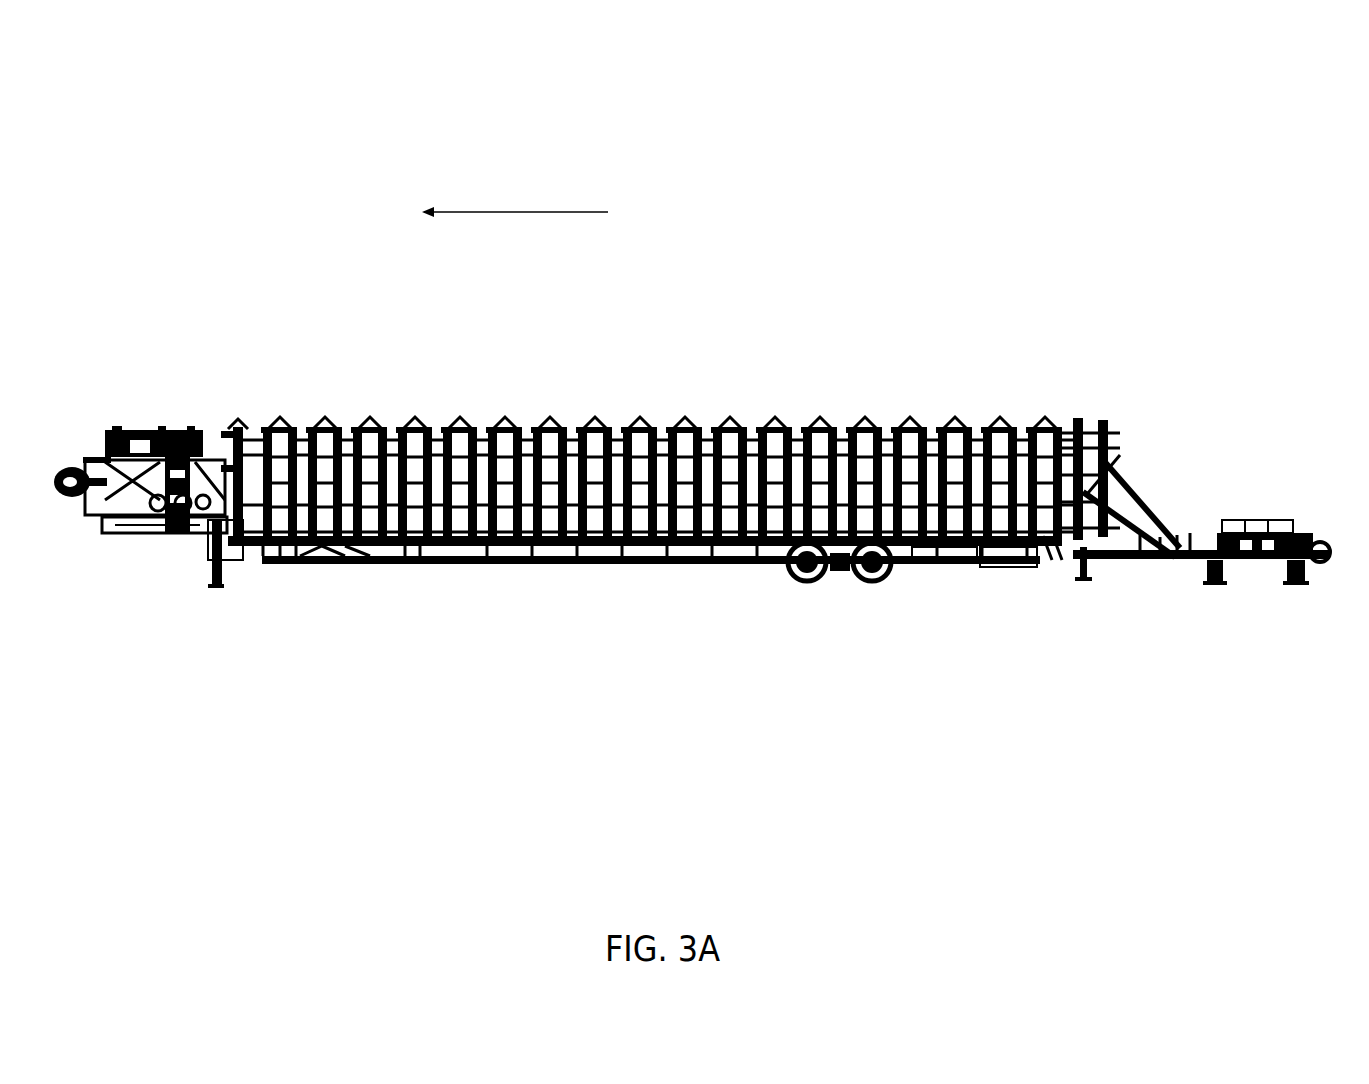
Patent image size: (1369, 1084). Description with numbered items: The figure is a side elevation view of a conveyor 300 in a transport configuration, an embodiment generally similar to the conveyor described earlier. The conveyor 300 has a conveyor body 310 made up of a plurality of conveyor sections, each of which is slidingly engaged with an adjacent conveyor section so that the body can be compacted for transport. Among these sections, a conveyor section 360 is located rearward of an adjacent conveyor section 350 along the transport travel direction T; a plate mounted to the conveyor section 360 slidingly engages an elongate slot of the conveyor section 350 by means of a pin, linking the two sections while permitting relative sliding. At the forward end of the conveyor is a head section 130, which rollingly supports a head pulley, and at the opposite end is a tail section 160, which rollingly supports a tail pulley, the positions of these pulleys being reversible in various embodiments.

The conveyor 300 is at (1296, 170).
The conveyor body 310 is at (818, 276).
The conveyor section 350 is at (1064, 416).
The conveyor section 360 is at (1110, 417).
The head section 130 is at (97, 394).
The tail section 160 is at (1294, 488).